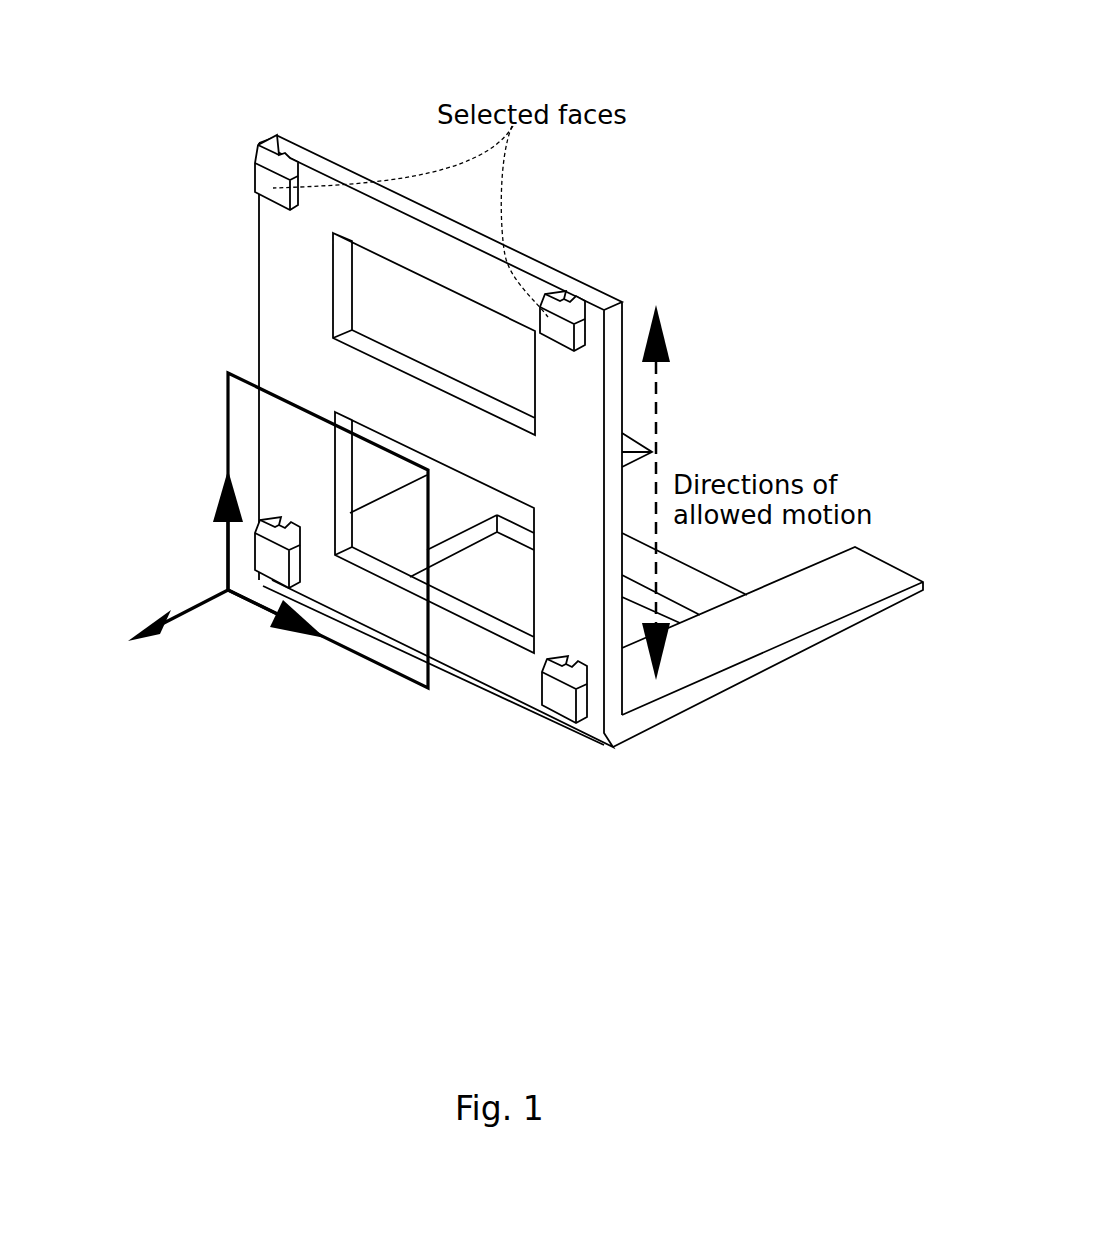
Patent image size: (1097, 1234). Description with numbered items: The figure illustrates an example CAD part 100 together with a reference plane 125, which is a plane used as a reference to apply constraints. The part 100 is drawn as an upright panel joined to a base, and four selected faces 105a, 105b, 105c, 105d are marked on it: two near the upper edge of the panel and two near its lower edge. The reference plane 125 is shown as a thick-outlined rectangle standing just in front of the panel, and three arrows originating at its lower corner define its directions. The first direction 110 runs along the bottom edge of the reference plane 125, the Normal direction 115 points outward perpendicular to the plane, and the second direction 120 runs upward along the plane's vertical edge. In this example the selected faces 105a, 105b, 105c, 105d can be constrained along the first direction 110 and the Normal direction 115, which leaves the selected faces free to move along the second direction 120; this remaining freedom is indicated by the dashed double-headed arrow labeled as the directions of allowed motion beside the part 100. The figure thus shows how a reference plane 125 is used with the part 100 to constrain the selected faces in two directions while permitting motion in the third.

The part 100 is at (797, 58).
The selected face 105a is at (272, 186).
The selected face 105b is at (576, 323).
The selected face 105c is at (268, 559).
The selected face 105d is at (561, 703).
The Dir 1 110 is at (276, 647).
The Normal direction 115 is at (155, 647).
The Dir 2 120 is at (199, 521).
The reference plane 125 is at (219, 391).